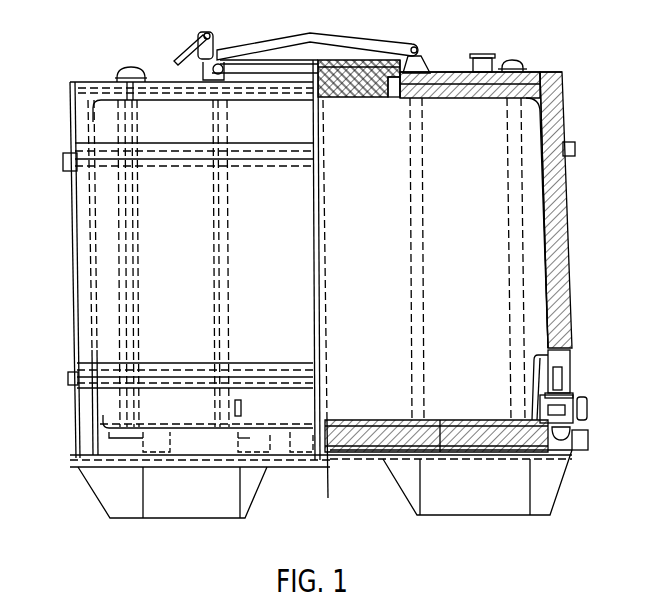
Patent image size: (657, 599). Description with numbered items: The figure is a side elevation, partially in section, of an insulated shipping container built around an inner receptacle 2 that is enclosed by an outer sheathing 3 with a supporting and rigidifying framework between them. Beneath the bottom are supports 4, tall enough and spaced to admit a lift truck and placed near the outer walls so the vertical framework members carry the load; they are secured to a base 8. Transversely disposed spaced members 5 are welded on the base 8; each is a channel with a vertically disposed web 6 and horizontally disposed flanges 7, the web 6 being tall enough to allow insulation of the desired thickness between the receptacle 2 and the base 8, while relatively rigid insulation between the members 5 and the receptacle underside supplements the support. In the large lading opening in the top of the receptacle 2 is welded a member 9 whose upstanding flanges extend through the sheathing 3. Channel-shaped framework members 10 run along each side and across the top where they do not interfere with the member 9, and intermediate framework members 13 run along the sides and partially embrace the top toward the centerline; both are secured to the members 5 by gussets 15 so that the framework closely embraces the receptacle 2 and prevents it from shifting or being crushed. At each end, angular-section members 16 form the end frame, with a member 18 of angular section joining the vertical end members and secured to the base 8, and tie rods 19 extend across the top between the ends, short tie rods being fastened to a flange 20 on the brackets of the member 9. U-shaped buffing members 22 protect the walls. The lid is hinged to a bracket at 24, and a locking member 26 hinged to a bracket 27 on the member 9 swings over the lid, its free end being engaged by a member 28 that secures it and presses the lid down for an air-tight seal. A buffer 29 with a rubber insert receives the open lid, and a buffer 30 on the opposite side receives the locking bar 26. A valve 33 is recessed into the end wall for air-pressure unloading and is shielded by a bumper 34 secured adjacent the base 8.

The inner receptacle 2 is at (492, 94).
The outer sheathing 3 is at (78, 231).
The supports 4 is at (325, 484).
The transversely disposed spaced members 5 is at (240, 438).
The web 6 is at (250, 185).
The flange 7 is at (142, 436).
The base 8 is at (250, 288).
The member fitted in lading opening 9 is at (391, 94).
The framework members 10 is at (136, 234).
The intermediate framework members 13 is at (418, 228).
The gussets 15 is at (241, 407).
The end frame members 16 is at (72, 90).
The joining member 18 is at (72, 458).
The tie rods 19 is at (166, 96).
The flange 20 is at (440, 80).
The buffing members 22 is at (63, 161).
The lid hinge 24 is at (203, 69).
The locking member 26 is at (352, 33).
The bracket 27 is at (423, 60).
The securing member 28 is at (186, 58).
The buffer 29 is at (124, 72).
The buffer 30 is at (522, 64).
The valve 33 is at (588, 405).
The bumper 34 is at (589, 437).